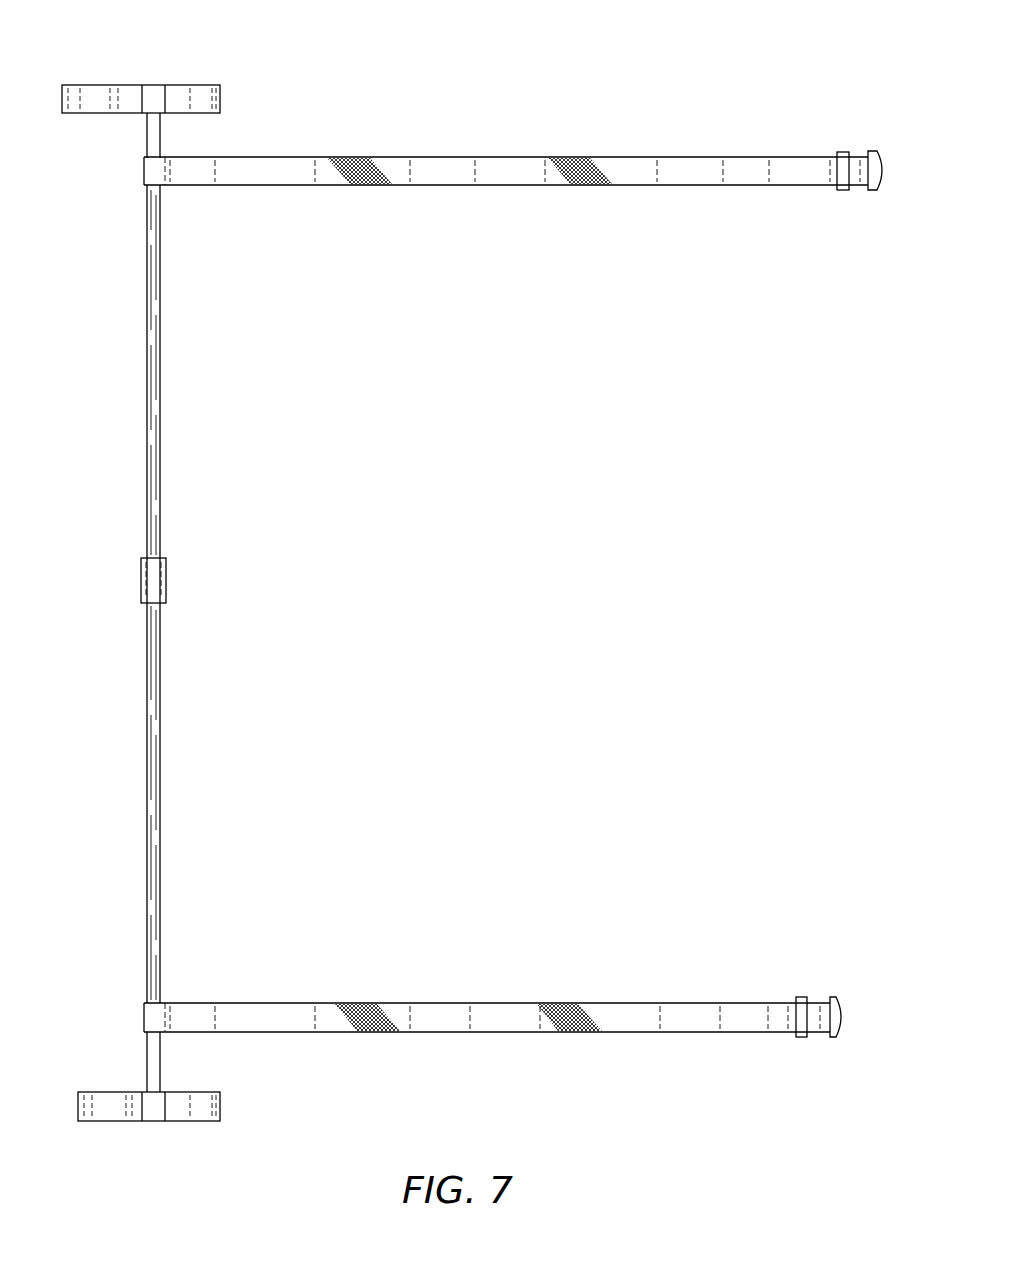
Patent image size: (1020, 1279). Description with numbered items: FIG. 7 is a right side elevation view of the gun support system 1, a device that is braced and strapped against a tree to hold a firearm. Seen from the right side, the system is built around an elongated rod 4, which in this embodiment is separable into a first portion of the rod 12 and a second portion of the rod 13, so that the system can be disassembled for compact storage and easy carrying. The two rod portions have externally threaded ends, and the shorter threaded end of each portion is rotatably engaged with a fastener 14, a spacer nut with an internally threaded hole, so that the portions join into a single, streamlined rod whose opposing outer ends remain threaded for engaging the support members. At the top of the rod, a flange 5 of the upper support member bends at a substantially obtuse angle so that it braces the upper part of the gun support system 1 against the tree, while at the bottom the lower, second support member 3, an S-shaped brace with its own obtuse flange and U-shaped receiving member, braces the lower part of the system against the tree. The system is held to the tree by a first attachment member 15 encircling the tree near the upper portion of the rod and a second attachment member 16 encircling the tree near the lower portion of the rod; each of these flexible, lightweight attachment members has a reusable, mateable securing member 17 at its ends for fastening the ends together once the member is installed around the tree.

The gun support system 1 is at (699, 122).
The lower, second support member 3 is at (112, 1121).
The rod 4 is at (147, 702).
The flange 5 is at (207, 84).
The first portion of the rod 12 is at (158, 494).
The second portion of the rod 13 is at (159, 762).
The fastener 14 is at (166, 580).
The first attachment member 15 is at (483, 157).
The second attachment member 16 is at (307, 1003).
The securing member 17 is at (877, 152).